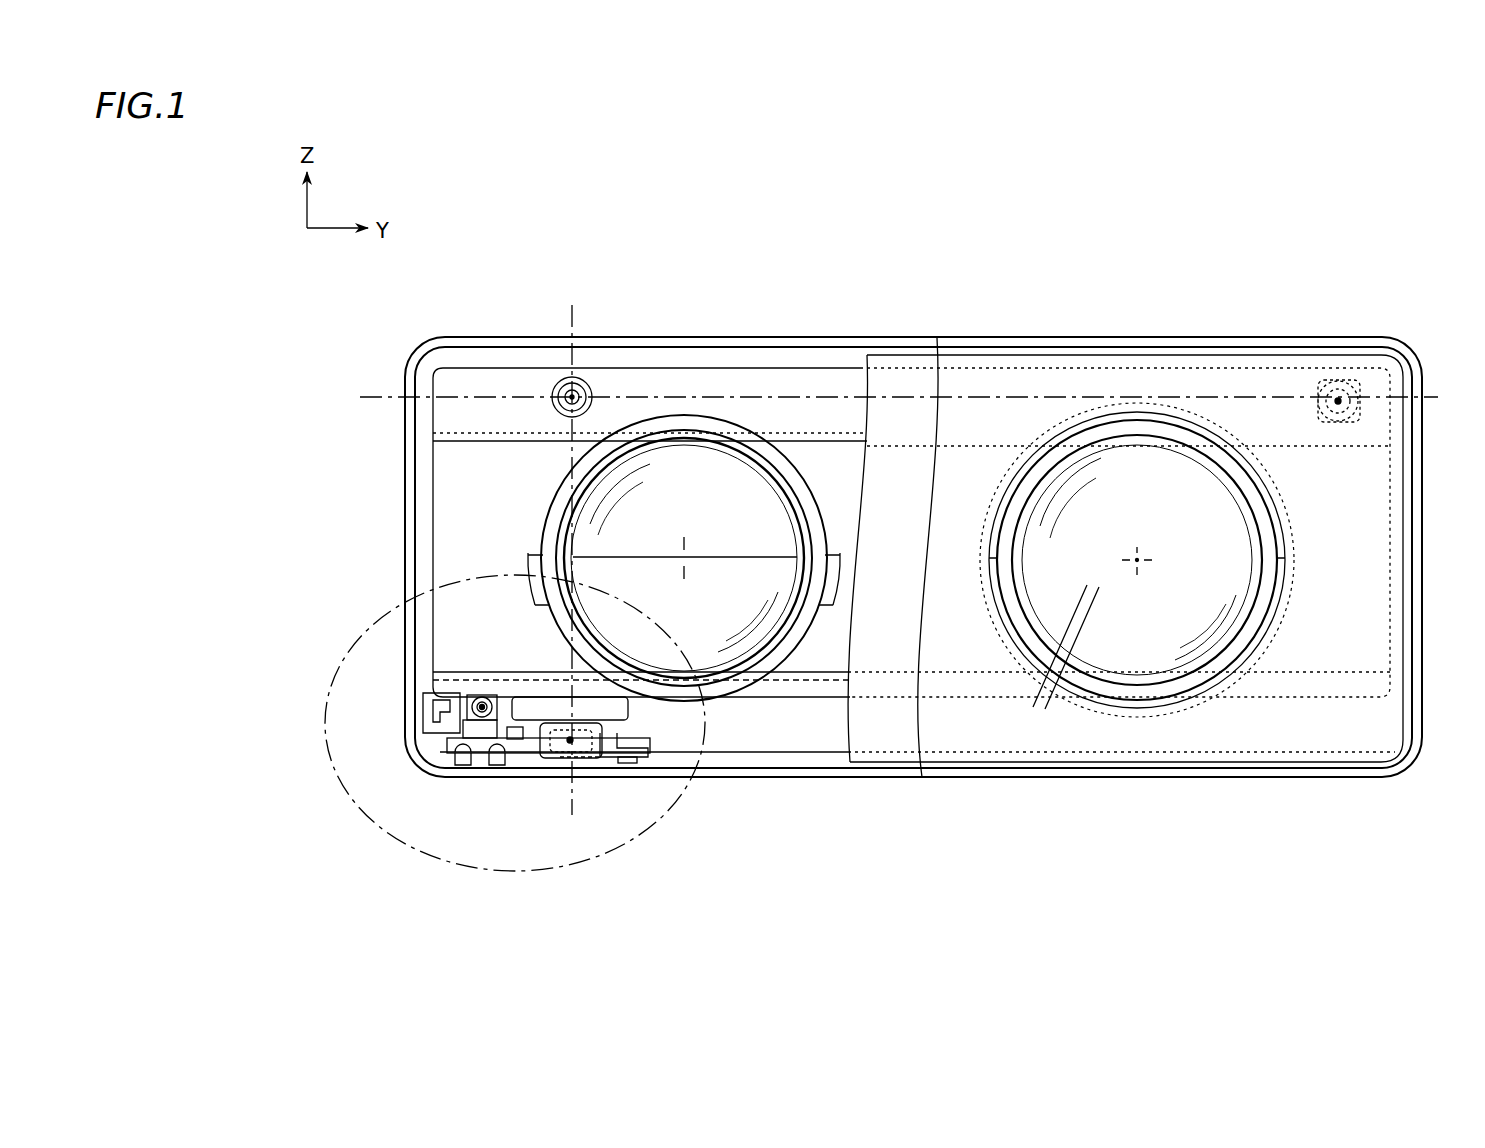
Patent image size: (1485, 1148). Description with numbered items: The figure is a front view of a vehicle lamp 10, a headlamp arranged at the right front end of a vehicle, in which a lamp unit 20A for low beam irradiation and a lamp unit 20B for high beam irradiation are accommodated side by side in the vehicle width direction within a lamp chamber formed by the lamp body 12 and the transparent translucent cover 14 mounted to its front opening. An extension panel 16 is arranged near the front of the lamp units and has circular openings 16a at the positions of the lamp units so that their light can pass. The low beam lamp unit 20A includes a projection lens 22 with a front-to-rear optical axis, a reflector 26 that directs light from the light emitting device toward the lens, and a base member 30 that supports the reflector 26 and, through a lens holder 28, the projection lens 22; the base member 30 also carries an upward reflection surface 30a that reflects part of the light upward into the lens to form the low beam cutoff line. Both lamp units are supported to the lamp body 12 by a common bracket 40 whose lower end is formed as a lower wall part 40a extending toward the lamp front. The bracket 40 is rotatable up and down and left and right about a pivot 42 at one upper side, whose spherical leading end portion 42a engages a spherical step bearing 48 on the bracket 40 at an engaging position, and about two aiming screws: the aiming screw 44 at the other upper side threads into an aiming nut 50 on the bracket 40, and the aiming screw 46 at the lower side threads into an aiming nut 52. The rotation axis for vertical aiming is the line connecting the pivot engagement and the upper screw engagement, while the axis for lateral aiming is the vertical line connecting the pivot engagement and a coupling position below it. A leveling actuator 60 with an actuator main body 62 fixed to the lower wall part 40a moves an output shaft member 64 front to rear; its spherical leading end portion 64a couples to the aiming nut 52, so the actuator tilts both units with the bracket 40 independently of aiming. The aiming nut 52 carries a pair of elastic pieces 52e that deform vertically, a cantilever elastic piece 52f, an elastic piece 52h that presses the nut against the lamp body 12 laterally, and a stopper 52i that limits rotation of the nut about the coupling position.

The vehicle lamp 10 is at (1167, 256).
The lamp body 12 is at (797, 782).
The translucent cover 14 is at (1268, 786).
The extension panel 16 is at (895, 768).
The circular opening 16a is at (1173, 417).
The lamp unit for low beam irradiation 20A is at (748, 482).
The lamp unit for high beam irradiation 20B is at (1169, 493).
The projection lens 22 is at (656, 431).
The reflector 26 is at (833, 488).
The lens holder 28 is at (713, 421).
The base member 30 is at (831, 614).
The upward reflection surface 30a is at (702, 557).
The bracket 40 is at (458, 355).
The lower wall part 40a is at (487, 670).
The pivot 42 is at (564, 384).
The leading end portion 42a is at (552, 392).
The aiming screw 44 is at (1350, 392).
The aiming screw 46 is at (482, 722).
The spherical step bearing 48 is at (550, 410).
The aiming nut 50 is at (1367, 418).
The aiming nut 52 is at (431, 740).
The elastic piece 52e is at (497, 750).
The elastic piece 52f is at (636, 760).
The elastic piece 52h is at (457, 757).
The stopper 52i is at (424, 704).
The leveling actuator 60 is at (637, 713).
The actuator main body 62 is at (547, 702).
The output shaft member 64 is at (597, 722).
The leading end portion 64a is at (568, 742).